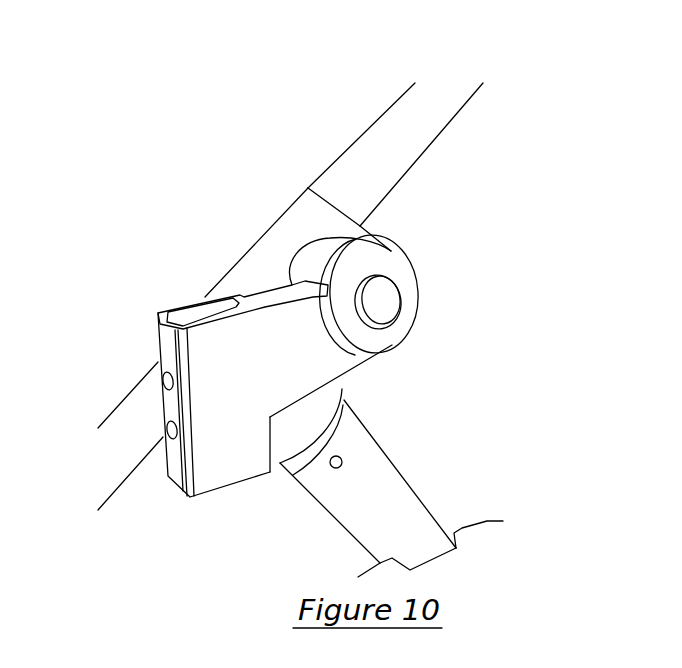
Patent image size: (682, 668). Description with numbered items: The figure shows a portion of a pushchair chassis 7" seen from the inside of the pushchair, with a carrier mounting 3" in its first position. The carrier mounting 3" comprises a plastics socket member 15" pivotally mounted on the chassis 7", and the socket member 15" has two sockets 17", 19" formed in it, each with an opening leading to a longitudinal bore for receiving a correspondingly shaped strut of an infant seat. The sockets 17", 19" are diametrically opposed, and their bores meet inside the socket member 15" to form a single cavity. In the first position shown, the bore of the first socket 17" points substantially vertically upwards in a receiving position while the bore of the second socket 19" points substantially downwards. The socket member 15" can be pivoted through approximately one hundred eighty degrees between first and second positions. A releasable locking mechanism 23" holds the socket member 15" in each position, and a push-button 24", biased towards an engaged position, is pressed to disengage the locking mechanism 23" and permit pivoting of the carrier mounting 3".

The pushchair chassis 7 is at (352, 130).
The first socket 17 is at (203, 283).
The releasable locking mechanism 23 is at (418, 335).
The push-button 24 is at (387, 305).
The carrier mounting 3 is at (357, 400).
The second socket 19 is at (222, 498).
The socket member 15 is at (163, 380).